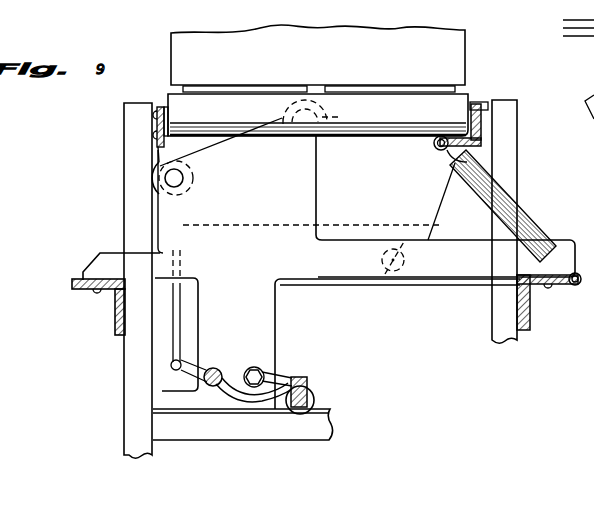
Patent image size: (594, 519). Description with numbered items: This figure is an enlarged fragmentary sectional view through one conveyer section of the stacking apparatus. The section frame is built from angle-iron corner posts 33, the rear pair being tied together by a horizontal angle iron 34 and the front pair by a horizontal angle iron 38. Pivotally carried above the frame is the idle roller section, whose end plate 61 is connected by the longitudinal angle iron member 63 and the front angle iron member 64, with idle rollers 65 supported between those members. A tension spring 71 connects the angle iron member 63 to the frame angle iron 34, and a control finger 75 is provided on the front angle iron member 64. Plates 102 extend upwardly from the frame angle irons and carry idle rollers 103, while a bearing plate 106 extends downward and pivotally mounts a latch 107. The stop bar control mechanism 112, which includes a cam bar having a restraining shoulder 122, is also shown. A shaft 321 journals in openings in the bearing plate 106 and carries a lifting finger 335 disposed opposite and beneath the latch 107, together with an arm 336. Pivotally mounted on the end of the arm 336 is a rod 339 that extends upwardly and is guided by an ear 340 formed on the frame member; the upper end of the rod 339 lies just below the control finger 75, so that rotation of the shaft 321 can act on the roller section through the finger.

The corner post 33 is at (130, 373).
The horizontal angle iron 34 is at (522, 318).
The horizontal angle iron 38 is at (78, 283).
The end plate 61 is at (344, 188).
The longitudinal angle iron member 63 is at (482, 128).
The front angle iron member 64 is at (168, 103).
The idle roller 65 is at (453, 110).
The tension spring 71 is at (535, 208).
The control finger 75 is at (157, 127).
The plate 102 is at (177, 218).
The idle roller 103 is at (152, 172).
The bearing plate 106 is at (264, 319).
The latch 107 is at (282, 375).
The stop bar control mechanism 112 is at (325, 401).
The restraining shoulder 122 is at (309, 383).
The shaft 321 is at (216, 368).
The lifting finger 335 is at (237, 402).
The arm 336 is at (185, 373).
The rod 339 is at (178, 313).
The ear 340 is at (185, 280).